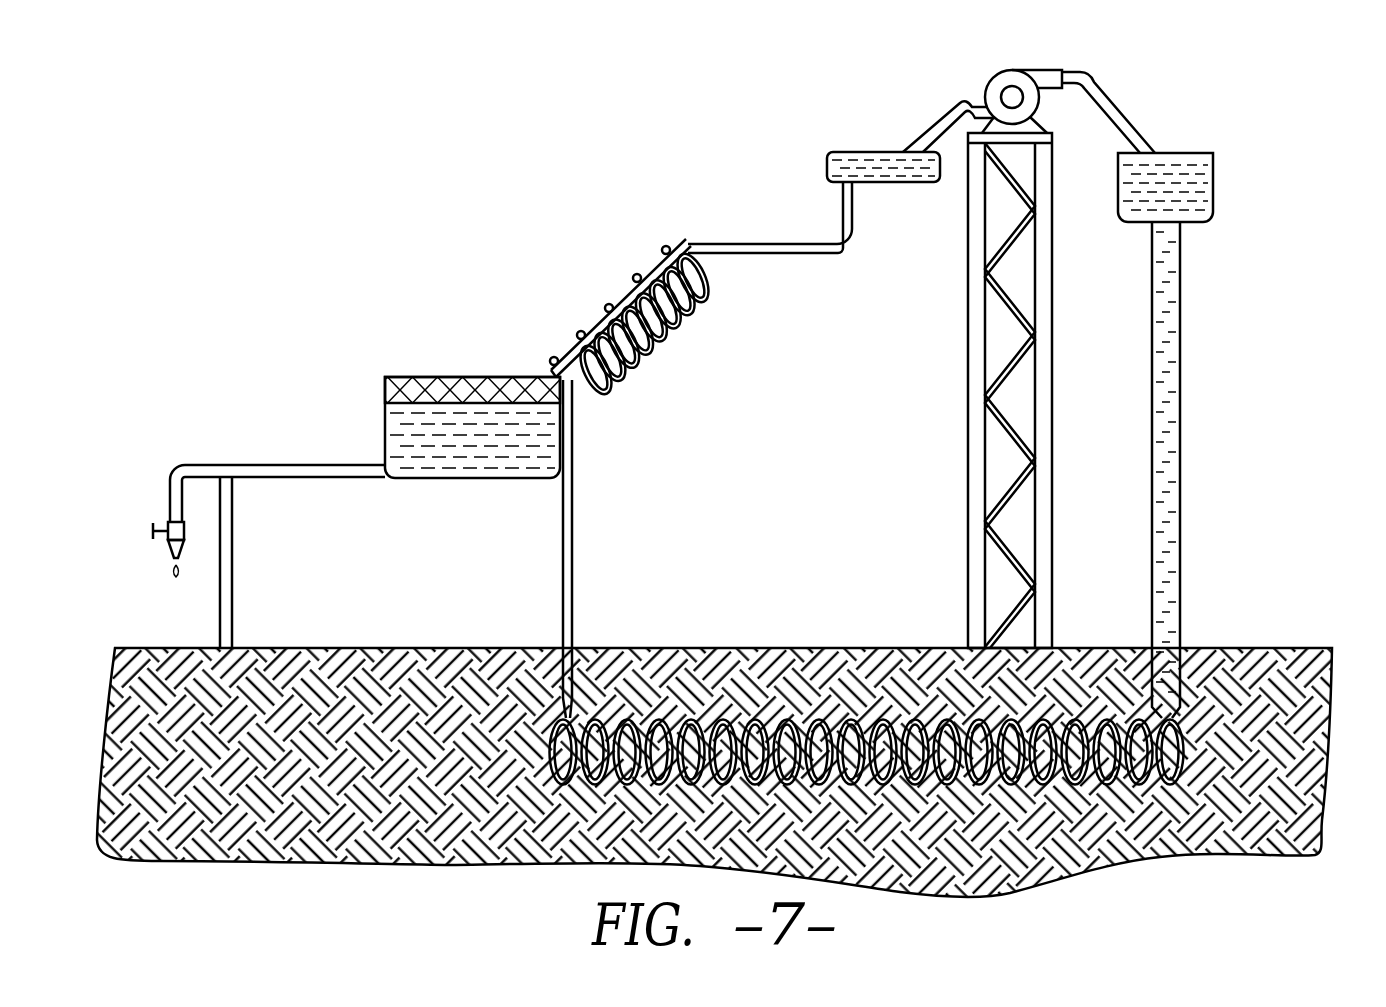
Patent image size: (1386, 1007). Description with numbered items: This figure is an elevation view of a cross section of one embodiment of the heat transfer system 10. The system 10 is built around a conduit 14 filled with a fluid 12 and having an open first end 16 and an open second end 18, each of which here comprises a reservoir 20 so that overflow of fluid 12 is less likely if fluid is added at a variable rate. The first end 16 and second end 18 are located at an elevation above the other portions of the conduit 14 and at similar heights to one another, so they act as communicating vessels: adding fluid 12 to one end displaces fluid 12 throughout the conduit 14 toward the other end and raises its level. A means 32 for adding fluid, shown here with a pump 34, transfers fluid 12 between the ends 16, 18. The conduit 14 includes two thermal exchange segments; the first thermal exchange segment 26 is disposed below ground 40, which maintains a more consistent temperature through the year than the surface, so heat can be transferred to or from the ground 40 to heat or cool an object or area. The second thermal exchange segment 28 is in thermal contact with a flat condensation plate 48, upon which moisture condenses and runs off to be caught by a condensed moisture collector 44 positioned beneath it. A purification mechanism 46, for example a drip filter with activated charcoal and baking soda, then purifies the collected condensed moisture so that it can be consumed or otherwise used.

The heat transfer system 10 is at (1311, 116).
The fluid 12 is at (1163, 500).
The conduit 14 is at (573, 592).
The first end 16 is at (1190, 153).
The second end 18 is at (852, 152).
The reservoir 20 is at (1214, 193).
The first thermal exchange segment 26 is at (1073, 785).
The second thermal exchange segment 28 is at (705, 292).
The means for adding fluid 32 is at (996, 75).
The pump 34 is at (1047, 69).
The ground 40 is at (1228, 665).
The condensed moisture collector 44 is at (450, 480).
The purification mechanism 46 is at (450, 377).
The condensation plate 48 is at (686, 243).